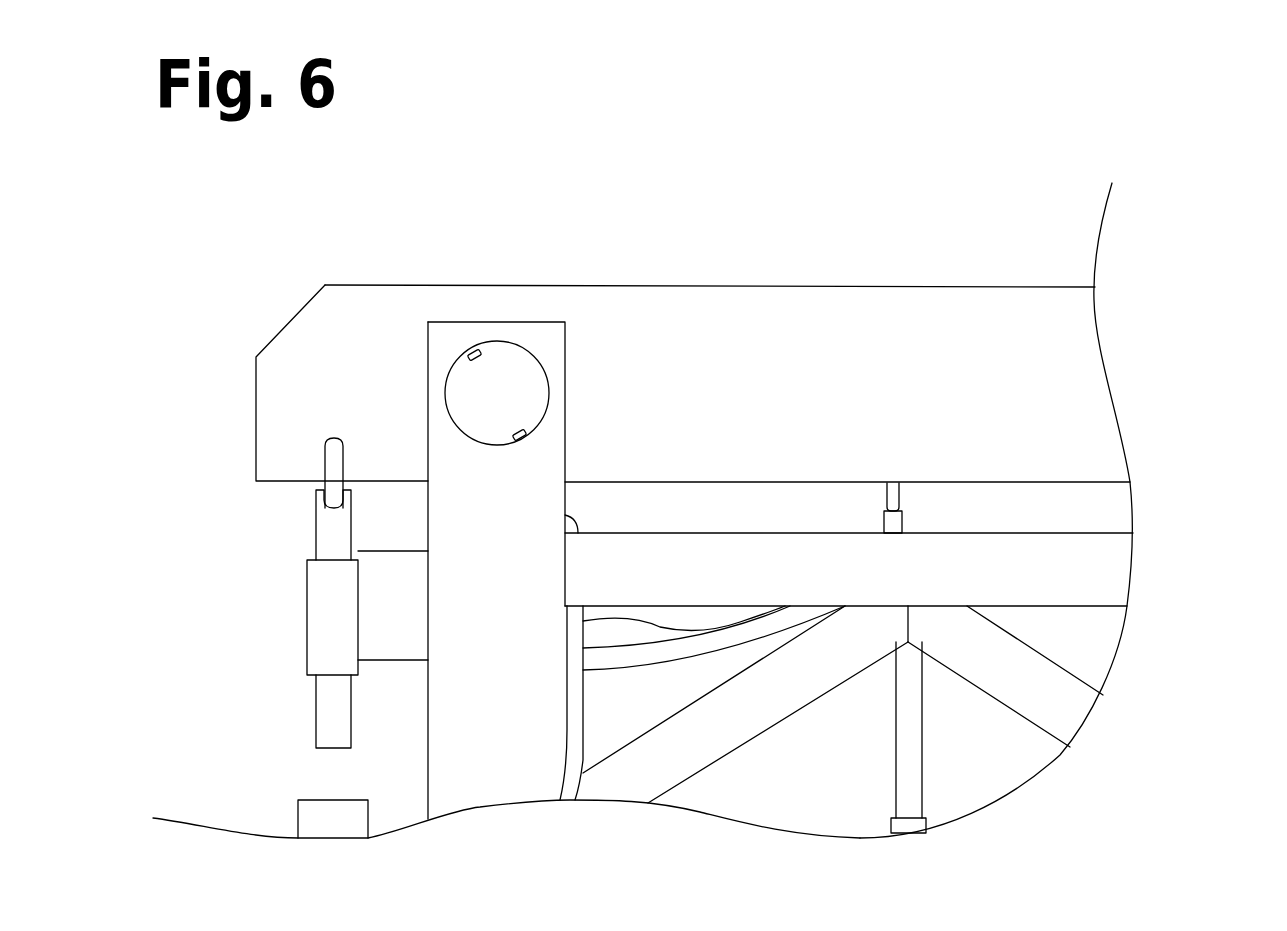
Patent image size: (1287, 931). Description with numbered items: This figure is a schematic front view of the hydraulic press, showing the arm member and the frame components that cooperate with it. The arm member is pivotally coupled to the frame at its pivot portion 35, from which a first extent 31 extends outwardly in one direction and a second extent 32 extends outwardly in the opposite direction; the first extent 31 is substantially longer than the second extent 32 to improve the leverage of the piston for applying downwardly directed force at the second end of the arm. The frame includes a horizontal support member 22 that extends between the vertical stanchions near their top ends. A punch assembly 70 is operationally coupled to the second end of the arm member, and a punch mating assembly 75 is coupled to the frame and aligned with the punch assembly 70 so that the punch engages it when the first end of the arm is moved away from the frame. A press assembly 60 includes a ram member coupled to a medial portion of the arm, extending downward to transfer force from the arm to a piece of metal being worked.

The horizontal support member 22 is at (1067, 567).
The first extent 31 is at (870, 350).
The second extent 32 is at (258, 430).
The pivot portion 35 is at (499, 372).
The press assembly 60 is at (907, 743).
The punch assembly 70 is at (325, 622).
The punch mating assembly 75 is at (317, 822).